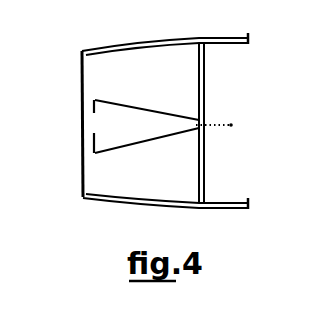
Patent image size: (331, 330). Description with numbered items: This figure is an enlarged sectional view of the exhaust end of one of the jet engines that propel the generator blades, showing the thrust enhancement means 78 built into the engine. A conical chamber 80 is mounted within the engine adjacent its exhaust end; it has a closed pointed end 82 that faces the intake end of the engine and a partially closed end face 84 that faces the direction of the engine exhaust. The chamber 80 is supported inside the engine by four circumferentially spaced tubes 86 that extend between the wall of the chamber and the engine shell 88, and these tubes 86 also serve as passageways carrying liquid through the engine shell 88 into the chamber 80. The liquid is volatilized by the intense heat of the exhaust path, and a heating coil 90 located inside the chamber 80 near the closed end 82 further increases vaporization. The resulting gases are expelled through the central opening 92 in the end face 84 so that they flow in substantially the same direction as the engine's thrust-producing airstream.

The channel-shaped clip body 78 is at (162, 41).
The engine shell 88 is at (247, 36).
The tubes 86 is at (205, 71).
The conical chamber 80 is at (143, 107).
The closed pointed end 82 is at (233, 122).
The heating coil 90 is at (221, 129).
The central opening 92 is at (96, 121).
The partially closed end face 84 is at (92, 143).